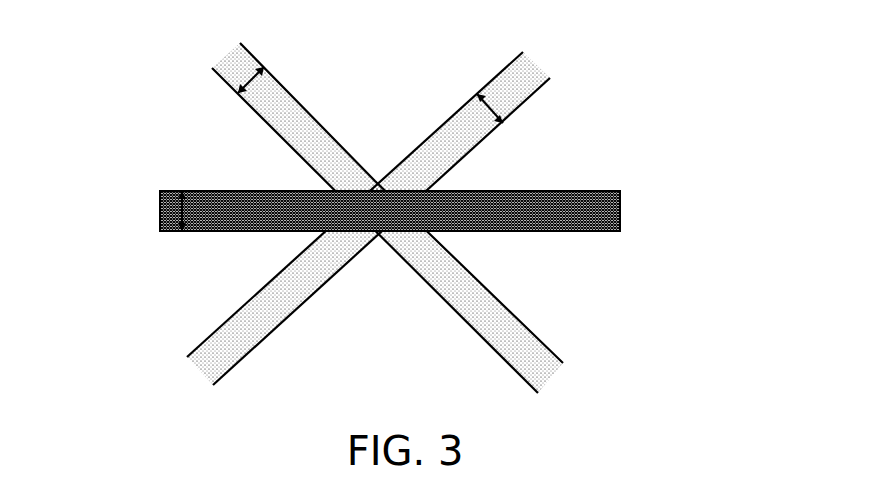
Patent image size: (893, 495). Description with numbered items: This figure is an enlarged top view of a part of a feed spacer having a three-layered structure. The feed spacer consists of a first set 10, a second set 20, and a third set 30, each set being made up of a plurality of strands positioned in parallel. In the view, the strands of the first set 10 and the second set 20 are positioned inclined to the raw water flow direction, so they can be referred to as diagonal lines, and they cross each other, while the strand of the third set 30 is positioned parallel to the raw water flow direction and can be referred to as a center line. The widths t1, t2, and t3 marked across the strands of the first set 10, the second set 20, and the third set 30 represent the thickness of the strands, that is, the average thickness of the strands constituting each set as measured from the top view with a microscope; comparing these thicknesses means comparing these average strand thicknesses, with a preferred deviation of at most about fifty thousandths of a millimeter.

The first set 10 is at (535, 62).
The second set 20 is at (559, 372).
The third set 30 is at (623, 211).
The width of the strands of the first set t1 is at (490, 105).
The width of the strands of the second set t2 is at (233, 83).
The width of the strands of the third set t3 is at (182, 212).